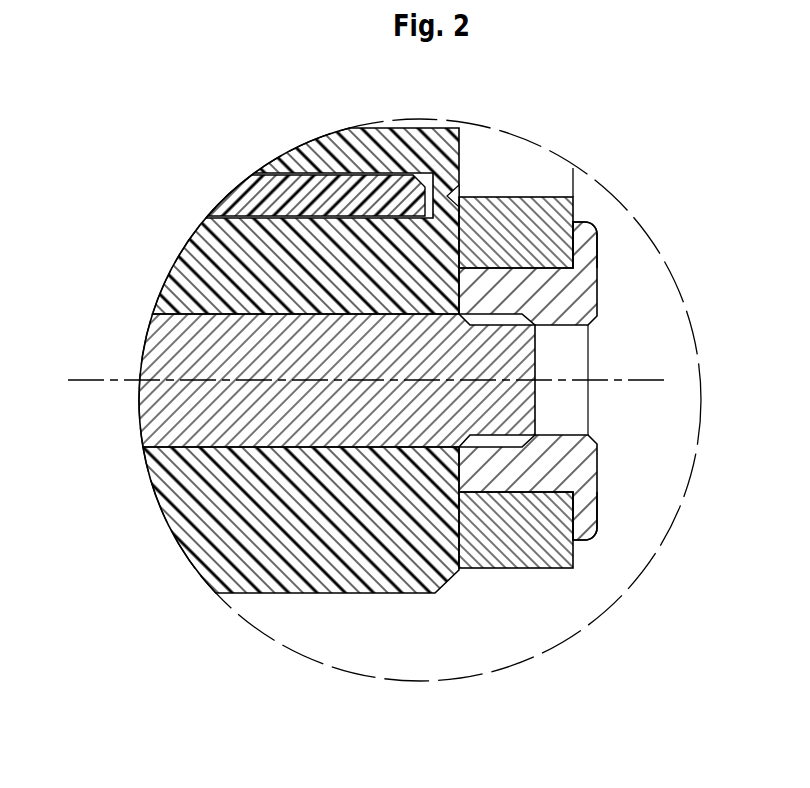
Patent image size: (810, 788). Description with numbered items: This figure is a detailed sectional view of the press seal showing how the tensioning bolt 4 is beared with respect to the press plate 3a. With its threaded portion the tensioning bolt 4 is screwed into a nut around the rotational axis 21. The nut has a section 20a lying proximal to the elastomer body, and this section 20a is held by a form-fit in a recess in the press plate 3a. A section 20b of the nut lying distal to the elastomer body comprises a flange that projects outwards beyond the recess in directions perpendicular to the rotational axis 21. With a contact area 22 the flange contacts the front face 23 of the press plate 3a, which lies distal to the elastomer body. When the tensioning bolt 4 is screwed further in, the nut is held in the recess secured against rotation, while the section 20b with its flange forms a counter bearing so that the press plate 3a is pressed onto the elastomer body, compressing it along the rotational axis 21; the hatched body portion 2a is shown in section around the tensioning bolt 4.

The housing body 2a is at (278, 570).
The shaft 4 is at (180, 347).
The securing pin 3a is at (531, 203).
The nut lower portion 20a is at (497, 483).
The nut body 20b is at (597, 472).
The axis 21 is at (98, 380).
The upper flange 22 is at (573, 211).
The lower flange 23 is at (573, 553).